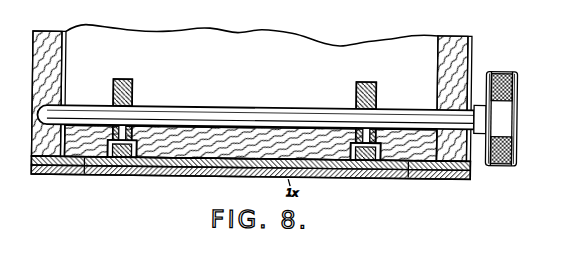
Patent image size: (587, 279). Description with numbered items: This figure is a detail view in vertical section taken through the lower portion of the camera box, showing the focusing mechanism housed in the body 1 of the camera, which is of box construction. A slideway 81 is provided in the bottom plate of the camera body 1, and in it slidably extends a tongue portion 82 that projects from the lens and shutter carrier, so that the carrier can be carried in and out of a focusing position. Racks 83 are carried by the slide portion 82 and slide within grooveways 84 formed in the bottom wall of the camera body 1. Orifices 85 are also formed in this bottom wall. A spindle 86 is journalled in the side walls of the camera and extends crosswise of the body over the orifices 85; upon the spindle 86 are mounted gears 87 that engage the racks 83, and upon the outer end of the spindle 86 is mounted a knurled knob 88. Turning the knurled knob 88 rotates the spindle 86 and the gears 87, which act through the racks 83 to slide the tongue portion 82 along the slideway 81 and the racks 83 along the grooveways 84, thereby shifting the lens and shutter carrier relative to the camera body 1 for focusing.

The body of camera 1 is at (472, 40).
The slideway 81 is at (385, 171).
The tongue portion 82 is at (150, 164).
The racks 83 is at (121, 157).
The grooveways 84 is at (115, 149).
The orifices 85 is at (85, 174).
The spindle 86 is at (200, 111).
The gears 87 is at (132, 71).
The knurled knob 88 is at (505, 130).